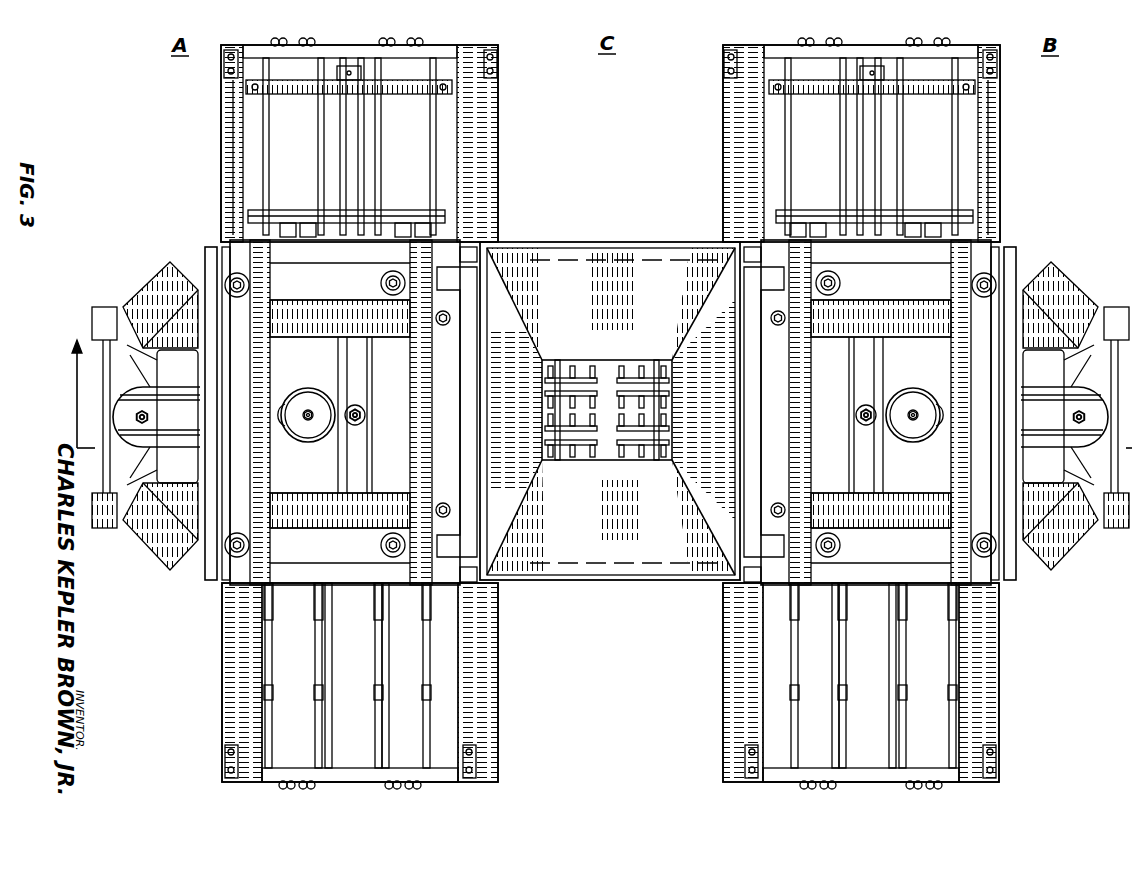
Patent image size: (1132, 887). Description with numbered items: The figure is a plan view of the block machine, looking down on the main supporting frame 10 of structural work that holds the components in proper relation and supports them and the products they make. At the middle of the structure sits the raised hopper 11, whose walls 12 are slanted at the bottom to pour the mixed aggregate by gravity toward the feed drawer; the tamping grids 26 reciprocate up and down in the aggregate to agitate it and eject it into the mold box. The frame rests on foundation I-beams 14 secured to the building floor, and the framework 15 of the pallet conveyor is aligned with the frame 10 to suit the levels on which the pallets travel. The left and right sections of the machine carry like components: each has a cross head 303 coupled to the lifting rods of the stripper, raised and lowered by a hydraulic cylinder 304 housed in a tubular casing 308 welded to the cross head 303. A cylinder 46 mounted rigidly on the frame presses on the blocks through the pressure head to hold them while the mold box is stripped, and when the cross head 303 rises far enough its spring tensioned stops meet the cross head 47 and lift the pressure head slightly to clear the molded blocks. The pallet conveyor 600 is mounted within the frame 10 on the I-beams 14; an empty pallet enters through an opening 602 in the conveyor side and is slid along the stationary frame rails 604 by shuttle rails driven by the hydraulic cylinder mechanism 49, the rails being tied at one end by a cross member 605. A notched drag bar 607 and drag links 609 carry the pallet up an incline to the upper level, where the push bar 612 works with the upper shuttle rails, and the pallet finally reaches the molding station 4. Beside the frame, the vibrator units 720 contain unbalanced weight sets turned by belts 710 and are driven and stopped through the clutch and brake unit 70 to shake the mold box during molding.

The molding station 4 is at (600, 355).
The frame 10 is at (212, 598).
The raised hopper 11 is at (599, 241).
The hopper walls 12 is at (560, 313).
The I-beams 14 is at (221, 686).
The pallet conveyor framework 15 is at (221, 159).
The tamping grids 26 is at (578, 378).
The cylinder 46 is at (364, 413).
The cross head 47 is at (487, 441).
The hydraulic operating cylinder mechanism 49 is at (866, 132).
The clutch and brake unit 70 is at (163, 395).
The cross head 303 is at (207, 262).
The hydraulic cylinder 304 is at (308, 408).
The tubular casing 308 is at (318, 440).
The pallet conveyor 600 is at (262, 133).
The opening 602 is at (280, 671).
The stationary frame rails 604 is at (271, 176).
The cross member 605 is at (722, 68).
The notched drag bar 607 is at (447, 206).
The drag links 609 is at (243, 80).
The push bar 612 is at (828, 90).
The belts 710 is at (160, 455).
The vibrator units 720 is at (176, 284).